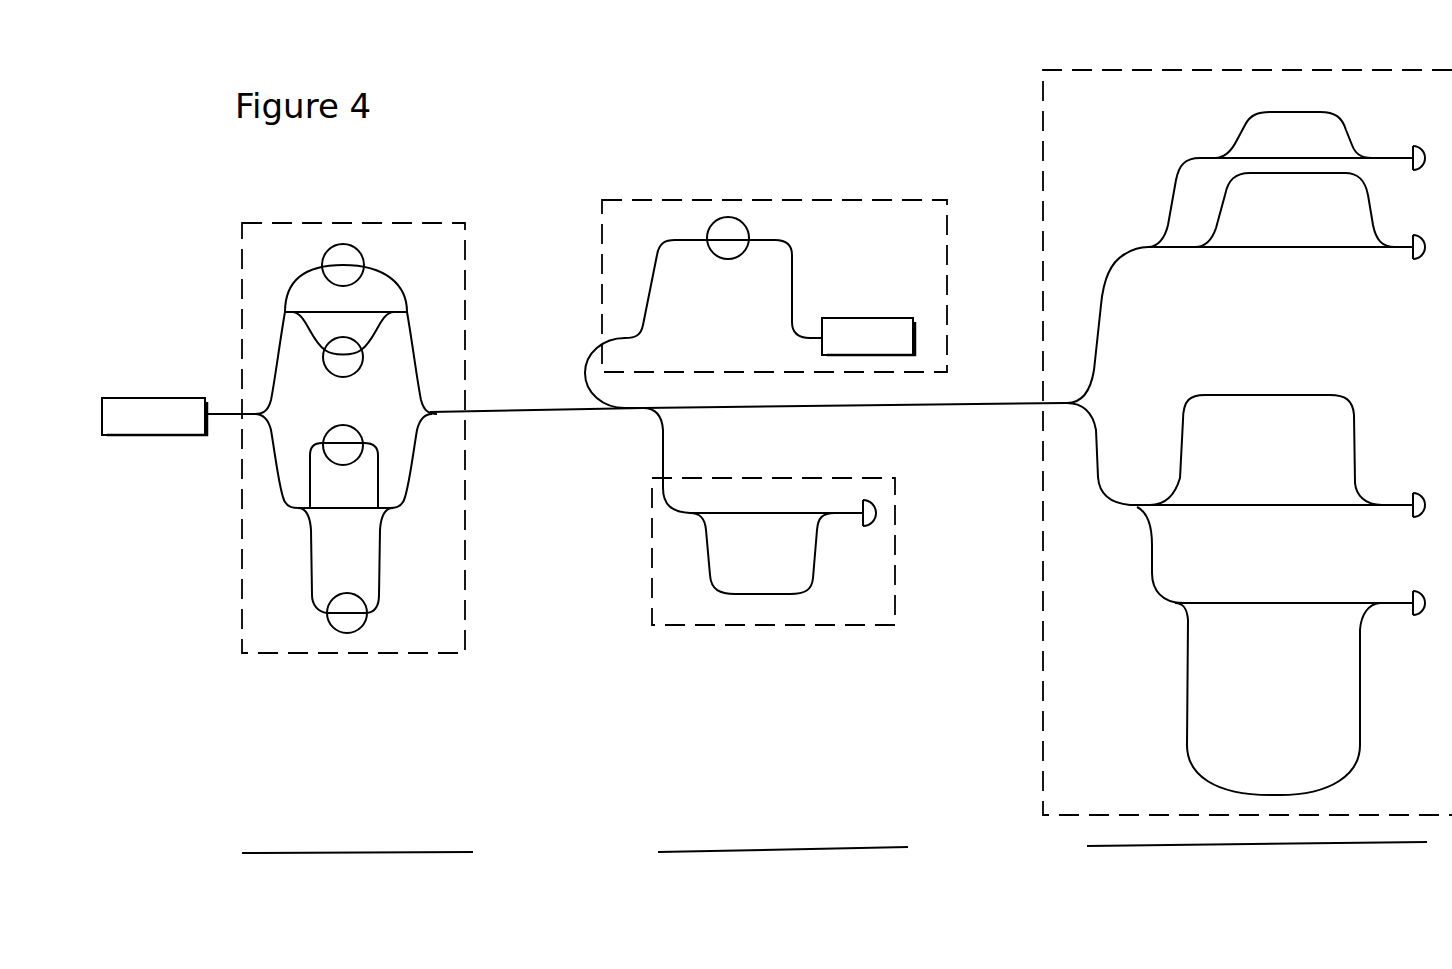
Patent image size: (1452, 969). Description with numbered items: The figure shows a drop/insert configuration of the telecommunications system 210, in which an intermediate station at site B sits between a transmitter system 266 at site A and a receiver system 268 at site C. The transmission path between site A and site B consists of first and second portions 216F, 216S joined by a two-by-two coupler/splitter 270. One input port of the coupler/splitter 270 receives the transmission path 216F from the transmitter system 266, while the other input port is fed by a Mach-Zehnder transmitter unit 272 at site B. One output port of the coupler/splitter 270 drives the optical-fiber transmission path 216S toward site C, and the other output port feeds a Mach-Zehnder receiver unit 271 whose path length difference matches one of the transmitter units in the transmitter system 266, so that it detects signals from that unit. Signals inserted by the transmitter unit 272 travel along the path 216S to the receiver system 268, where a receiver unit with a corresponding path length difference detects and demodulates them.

The telecommunications system 210 is at (722, 118).
The transmitter system 266 is at (422, 220).
The first portion of transmission path 216F is at (522, 410).
The second portion of transmission path 216S is at (997, 405).
The coupler/splitter 270 is at (643, 412).
The Mach-Zehnder receiver unit 271 is at (815, 627).
The transmitter unit 272 is at (857, 197).
The receiver system 268 is at (1125, 70).